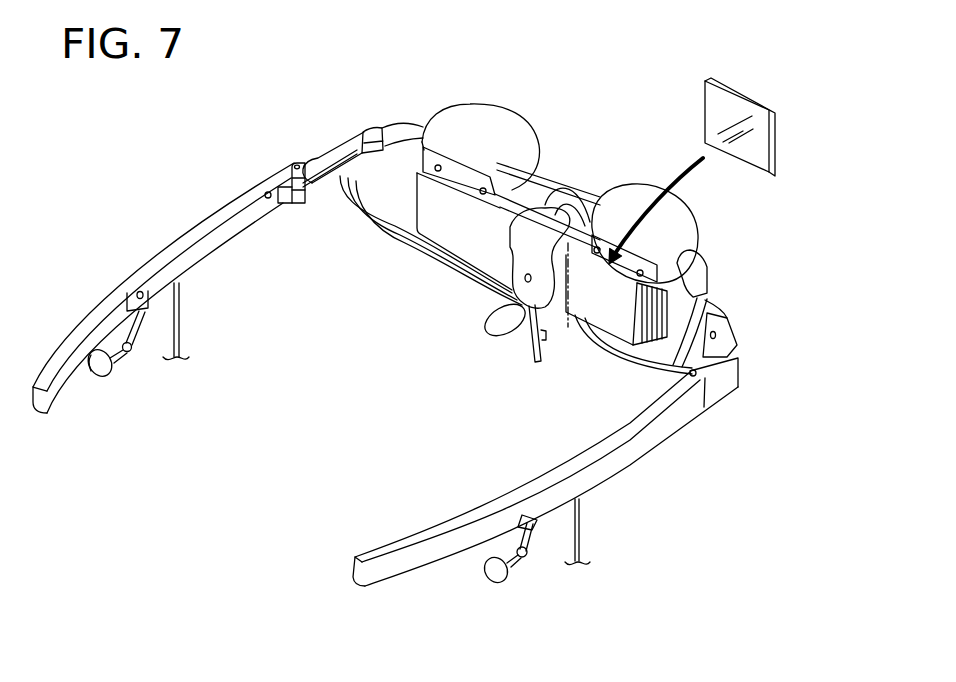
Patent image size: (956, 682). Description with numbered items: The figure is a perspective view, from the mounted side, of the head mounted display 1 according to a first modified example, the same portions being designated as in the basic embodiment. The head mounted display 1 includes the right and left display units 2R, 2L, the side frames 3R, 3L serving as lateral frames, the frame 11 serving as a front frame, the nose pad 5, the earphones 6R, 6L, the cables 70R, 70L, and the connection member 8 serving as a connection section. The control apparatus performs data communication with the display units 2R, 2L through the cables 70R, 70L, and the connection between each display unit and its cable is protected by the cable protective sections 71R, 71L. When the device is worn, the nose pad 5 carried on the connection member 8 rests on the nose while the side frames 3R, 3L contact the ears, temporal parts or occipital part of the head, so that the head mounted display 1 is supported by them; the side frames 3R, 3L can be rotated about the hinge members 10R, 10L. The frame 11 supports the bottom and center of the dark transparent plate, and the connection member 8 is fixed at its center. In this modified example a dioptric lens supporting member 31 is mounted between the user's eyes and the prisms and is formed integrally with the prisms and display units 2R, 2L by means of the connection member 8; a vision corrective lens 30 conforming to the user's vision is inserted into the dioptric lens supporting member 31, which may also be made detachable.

The head mounted display 1 is at (543, 78).
The display unit 2L is at (476, 112).
The display unit 2R is at (673, 208).
The side frame 3L is at (186, 228).
The side frame 3R is at (653, 440).
The nose pad 5 is at (494, 334).
The earphone 6L is at (115, 373).
The earphone 6R is at (500, 584).
The connection member 8 is at (575, 215).
The hinge member 10L is at (320, 158).
The hinge member 10R is at (727, 385).
The frame 11 is at (363, 217).
The vision corrective lens 30 is at (751, 97).
The dioptric lens supporting member 31 is at (430, 233).
The cable 70L is at (181, 318).
The cable 70R is at (581, 538).
The cable protective section 71L is at (388, 126).
The cable protective section 71R is at (709, 278).